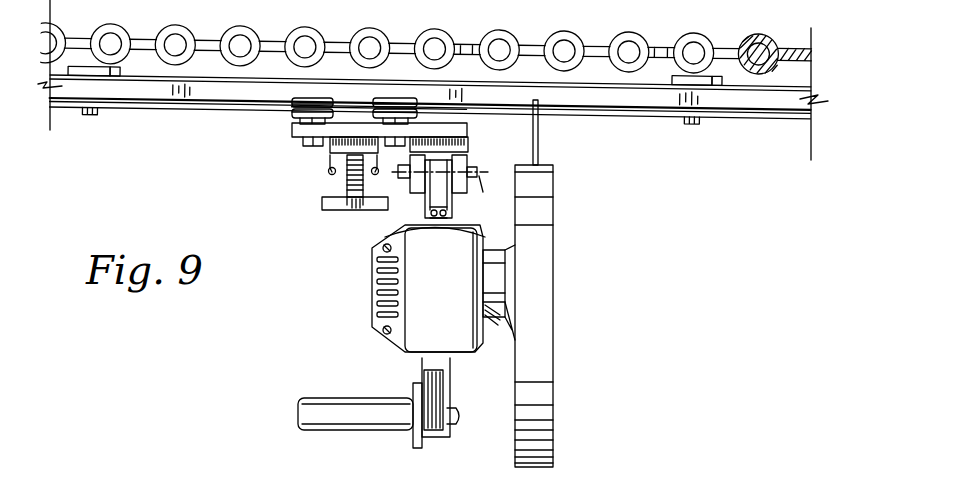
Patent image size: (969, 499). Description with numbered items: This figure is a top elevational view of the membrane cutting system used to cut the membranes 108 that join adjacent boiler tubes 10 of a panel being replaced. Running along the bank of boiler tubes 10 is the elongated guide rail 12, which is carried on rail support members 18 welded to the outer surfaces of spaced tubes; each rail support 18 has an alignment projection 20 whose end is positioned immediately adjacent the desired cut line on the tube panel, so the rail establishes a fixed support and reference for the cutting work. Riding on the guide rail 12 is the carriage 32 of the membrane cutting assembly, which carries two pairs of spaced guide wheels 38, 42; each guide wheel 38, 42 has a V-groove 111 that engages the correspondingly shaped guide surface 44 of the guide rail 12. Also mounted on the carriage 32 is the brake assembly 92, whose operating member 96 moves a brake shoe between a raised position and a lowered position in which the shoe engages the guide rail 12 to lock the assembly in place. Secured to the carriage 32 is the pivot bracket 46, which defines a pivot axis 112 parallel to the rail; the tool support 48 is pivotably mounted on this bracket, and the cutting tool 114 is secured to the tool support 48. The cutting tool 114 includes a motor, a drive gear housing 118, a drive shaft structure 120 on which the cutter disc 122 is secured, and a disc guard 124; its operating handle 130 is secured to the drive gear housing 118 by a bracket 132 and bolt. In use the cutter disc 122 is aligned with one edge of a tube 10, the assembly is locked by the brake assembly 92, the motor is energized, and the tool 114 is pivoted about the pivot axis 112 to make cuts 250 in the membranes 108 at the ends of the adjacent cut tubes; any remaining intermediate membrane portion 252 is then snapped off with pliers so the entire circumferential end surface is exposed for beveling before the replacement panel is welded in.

The boiler tubes 10 is at (790, 45).
The membranes 108 is at (465, 42).
The intermediate membrane portion 252 is at (605, 62).
The guide rail 12 is at (141, 118).
The guide surface 44 is at (205, 108).
The V-groove 111 is at (287, 106).
The rail support member 18 is at (86, 74).
The cuts 250 is at (653, 66).
The alignment projection 20 is at (718, 85).
The guide wheel 42 is at (313, 97).
The guide wheel 38 is at (395, 97).
The carriage 32 is at (286, 149).
The pivot bracket 46 is at (478, 149).
The tool support 48 is at (432, 198).
The pivot axis 112 is at (494, 197).
The brake assembly 92 is at (314, 185).
The operating member 96 is at (340, 210).
The cutting tool 114 is at (352, 300).
The drive gear housing 118 is at (458, 308).
The drive shaft structure 120 is at (497, 277).
The disc guard 124 is at (545, 286).
The cutter disc 122 is at (540, 142).
The bracket 132 is at (430, 360).
The operating handle 130 is at (365, 412).